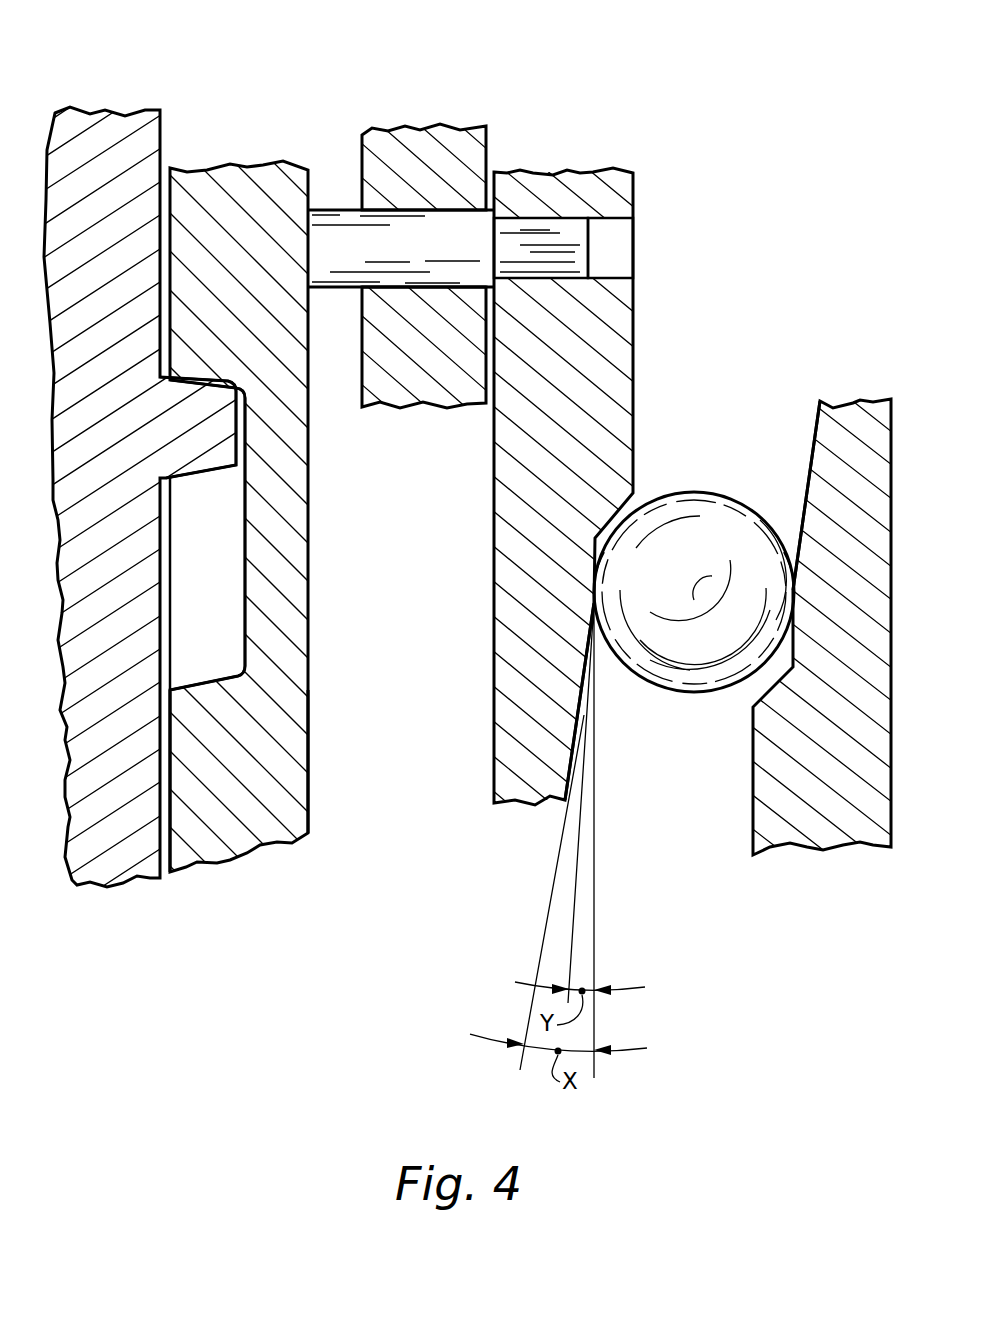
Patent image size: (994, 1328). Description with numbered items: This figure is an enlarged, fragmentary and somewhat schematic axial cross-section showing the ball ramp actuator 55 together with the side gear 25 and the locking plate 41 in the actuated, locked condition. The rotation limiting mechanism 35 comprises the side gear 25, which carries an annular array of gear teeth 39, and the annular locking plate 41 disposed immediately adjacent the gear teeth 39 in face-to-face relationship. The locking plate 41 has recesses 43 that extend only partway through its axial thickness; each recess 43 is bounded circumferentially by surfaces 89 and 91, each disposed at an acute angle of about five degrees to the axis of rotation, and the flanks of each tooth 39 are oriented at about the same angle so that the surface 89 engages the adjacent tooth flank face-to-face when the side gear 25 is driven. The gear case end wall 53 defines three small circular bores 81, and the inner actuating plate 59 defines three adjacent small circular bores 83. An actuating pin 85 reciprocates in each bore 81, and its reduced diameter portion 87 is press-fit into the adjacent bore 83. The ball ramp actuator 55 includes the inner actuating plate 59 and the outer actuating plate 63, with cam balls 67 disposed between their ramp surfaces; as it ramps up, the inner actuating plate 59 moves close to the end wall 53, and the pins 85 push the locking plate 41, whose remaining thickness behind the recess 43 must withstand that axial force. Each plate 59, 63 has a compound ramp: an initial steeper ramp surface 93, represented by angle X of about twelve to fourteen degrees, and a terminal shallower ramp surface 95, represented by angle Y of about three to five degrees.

The side gear 25 is at (140, 471).
The rotation limiting mechanism 35 is at (276, 438).
The gear teeth 39 is at (202, 427).
The annular locking plate 41 is at (238, 757).
The recesses 43 is at (222, 578).
The gear case end wall 53 is at (424, 235).
The ball ramp actuator 55 is at (743, 547).
The inner actuating plate 59 is at (605, 322).
The outer actuating plate 63 is at (850, 436).
The cam balls 67 is at (703, 640).
The circular bores 81 is at (450, 278).
The circular bores 83 is at (633, 248).
The actuating pin 85 is at (332, 212).
The reduced diameter portion 87 is at (545, 240).
The surface 89 is at (195, 390).
The surface 91 is at (202, 682).
The steeper ramp surface 93 is at (810, 446).
The shallower ramp surface 95 is at (625, 549).